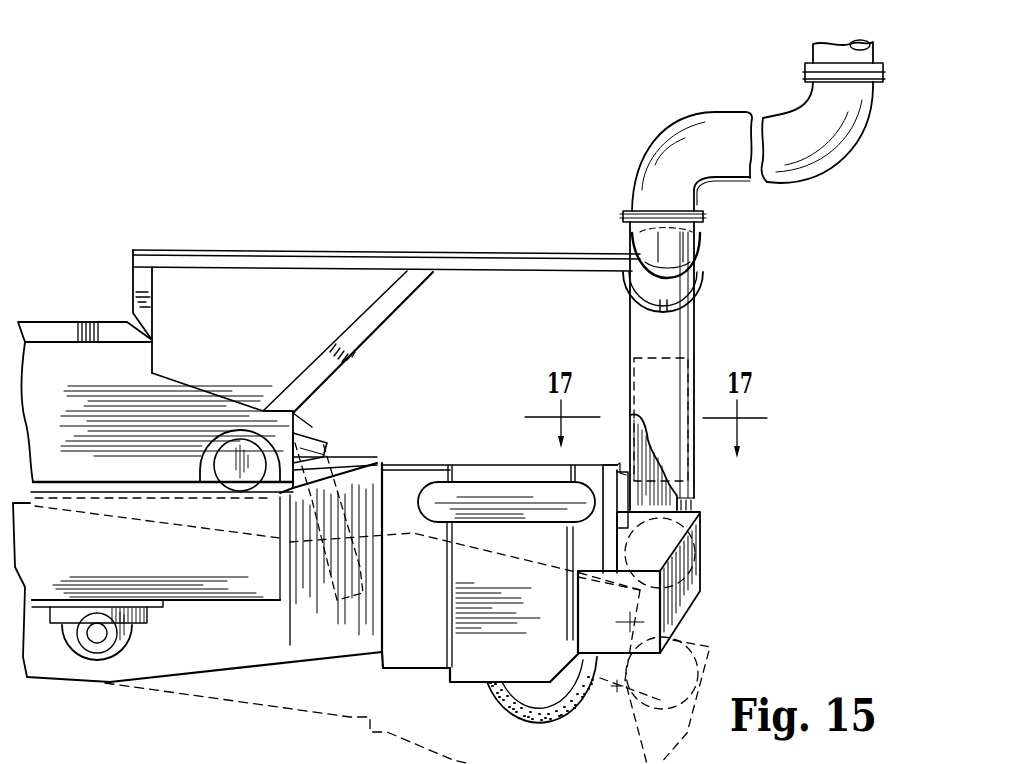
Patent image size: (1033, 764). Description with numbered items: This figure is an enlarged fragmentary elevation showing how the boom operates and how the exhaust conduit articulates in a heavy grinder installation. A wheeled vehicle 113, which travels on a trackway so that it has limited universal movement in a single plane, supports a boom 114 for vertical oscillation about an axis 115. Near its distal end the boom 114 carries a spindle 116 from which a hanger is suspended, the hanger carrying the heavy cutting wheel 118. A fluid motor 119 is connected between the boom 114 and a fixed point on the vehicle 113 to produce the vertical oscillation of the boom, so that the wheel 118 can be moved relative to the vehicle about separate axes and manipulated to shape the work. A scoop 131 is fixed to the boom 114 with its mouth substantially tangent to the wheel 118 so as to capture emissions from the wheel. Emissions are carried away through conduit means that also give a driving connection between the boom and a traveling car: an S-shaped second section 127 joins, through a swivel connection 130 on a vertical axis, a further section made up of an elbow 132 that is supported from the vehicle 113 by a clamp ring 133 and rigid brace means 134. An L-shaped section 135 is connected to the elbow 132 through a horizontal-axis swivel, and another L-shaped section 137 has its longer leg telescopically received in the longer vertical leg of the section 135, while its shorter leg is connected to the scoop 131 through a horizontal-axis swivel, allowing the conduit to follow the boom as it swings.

The second automotive wheeled vehicle 113 is at (62, 357).
The boom 114 is at (363, 640).
The axis 115 is at (97, 633).
The spindle 116 is at (530, 495).
The cutting wheel 118 is at (540, 717).
The fluid motor 119 is at (325, 452).
The second section 127 is at (657, 173).
The swivel connection 130 is at (627, 213).
The scoop 131 is at (697, 584).
The elbow 132 is at (677, 250).
The clamp ring 133 is at (702, 278).
The rigid brace means 134 is at (470, 251).
The L-shaped section 135 is at (690, 333).
The L-shaped section 137 is at (690, 383).